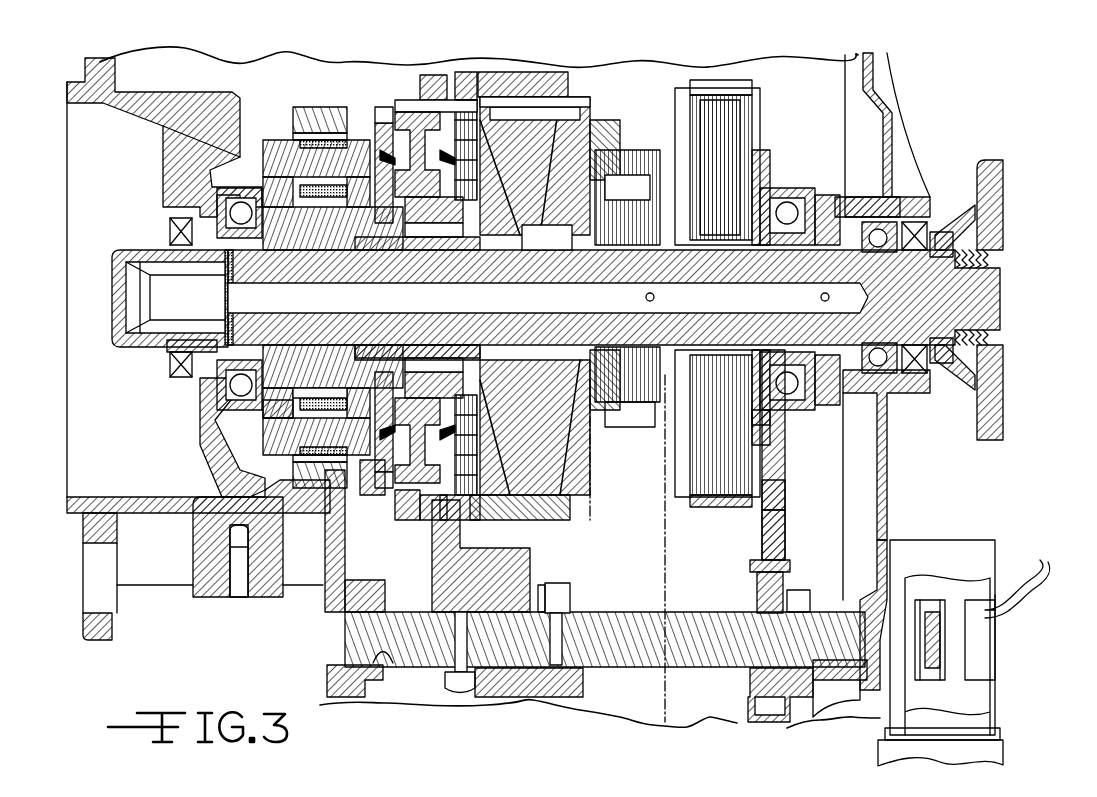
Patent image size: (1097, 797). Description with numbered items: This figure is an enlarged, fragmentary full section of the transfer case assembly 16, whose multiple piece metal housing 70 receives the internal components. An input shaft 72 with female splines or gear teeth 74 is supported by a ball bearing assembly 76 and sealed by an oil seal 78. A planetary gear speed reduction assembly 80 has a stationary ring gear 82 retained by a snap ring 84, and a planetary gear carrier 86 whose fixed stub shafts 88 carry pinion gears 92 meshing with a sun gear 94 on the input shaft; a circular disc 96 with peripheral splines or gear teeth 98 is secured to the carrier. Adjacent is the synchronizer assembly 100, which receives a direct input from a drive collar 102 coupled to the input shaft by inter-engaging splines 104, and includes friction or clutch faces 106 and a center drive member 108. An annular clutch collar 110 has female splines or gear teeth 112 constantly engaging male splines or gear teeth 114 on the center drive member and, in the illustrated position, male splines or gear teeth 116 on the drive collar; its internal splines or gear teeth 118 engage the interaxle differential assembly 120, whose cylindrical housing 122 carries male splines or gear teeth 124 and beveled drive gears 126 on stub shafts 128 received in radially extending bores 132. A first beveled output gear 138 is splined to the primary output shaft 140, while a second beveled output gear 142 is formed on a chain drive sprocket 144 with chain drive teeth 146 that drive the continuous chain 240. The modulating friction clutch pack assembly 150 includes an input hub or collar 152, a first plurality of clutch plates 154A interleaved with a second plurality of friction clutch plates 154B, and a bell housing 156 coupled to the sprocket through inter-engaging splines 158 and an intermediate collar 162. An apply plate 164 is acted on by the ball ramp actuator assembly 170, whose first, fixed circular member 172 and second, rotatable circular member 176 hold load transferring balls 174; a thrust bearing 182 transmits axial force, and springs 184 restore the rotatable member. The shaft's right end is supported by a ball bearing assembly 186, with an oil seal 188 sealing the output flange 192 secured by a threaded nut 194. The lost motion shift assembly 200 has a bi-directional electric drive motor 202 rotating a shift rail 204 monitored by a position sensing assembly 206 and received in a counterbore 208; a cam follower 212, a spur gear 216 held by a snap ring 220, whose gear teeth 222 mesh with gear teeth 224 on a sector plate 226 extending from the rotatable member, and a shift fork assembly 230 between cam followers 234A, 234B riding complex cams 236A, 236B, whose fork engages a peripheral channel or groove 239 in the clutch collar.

The transfer case assembly 16 is at (965, 60).
The housing 70 is at (97, 62).
The input shaft 72 is at (125, 347).
The female splines or gear teeth 74 is at (152, 293).
The ball bearing assembly 76 is at (232, 203).
The oil seal 78 is at (172, 378).
The planetary gear speed reduction assembly 80 is at (301, 56).
The stationary ring gear 82 is at (300, 505).
The snap ring 84 is at (405, 500).
The planetary gear carrier 86 is at (285, 445).
The fixed stub shafts 88 is at (263, 438).
The pinion gears 92 is at (270, 105).
The sun gear 94 is at (345, 298).
The circular disc 96 is at (350, 110).
The peripheral splines or gear teeth 98 is at (372, 470).
The synchronizer assembly 100 is at (445, 44).
The drive collar 102 is at (560, 75).
The inter-engaging splines 104 is at (428, 345).
The friction or clutch faces 106 is at (380, 105).
The center drive member 108 is at (428, 78).
The annular clutch collar 110 is at (540, 95).
The female splines or gear teeth 112 is at (440, 115).
The male splines or gear teeth 114 is at (440, 520).
The male splines or gear teeth 116 is at (478, 80).
The female or internal splines or gear teeth 118 is at (530, 512).
The interaxle differential assembly 120 is at (632, 100).
The cylindrical housing 122 is at (548, 470).
The male splines or gear teeth 124 is at (575, 100).
The beveled drive gears 126 is at (570, 165).
The stub shafts 128 is at (565, 135).
The radially extending bores 132 is at (568, 80).
The first beveled output gear 138 is at (547, 238).
The primary output shaft 140 is at (978, 297).
The second beveled output gear 142 is at (572, 383).
The chain drive sprocket 144 is at (608, 395).
The chain drive teeth 146 is at (632, 412).
The modulating friction clutch pack assembly 150 is at (722, 60).
The input hub or collar 152 is at (740, 180).
The first plurality of clutch plates 154A is at (715, 150).
The second plurality of friction clutch plates 154B is at (720, 120).
The bell housing 156 is at (725, 92).
The inter-engaging splines 158 is at (715, 262).
The intermediate collar 162 is at (668, 262).
The apply plate 164 is at (720, 507).
The ball ramp actuator assembly 170 is at (866, 465).
The first, fixed circular member 172 is at (803, 405).
The load transferring balls 174 is at (796, 213).
The second, rotatable circular member 176 is at (785, 463).
The thrust bearing 182 is at (765, 505).
The springs 184 is at (772, 405).
The ball bearing assembly 186 is at (888, 165).
The oil seal 188 is at (915, 222).
The output flange 192 is at (1003, 197).
The threaded nut 194 is at (990, 258).
The lost motion shift assembly 200 is at (1010, 650).
The bi-directional electric drive motor 202 is at (1002, 752).
The bi-directionally rotating shift rail 204 is at (718, 662).
The position sensing assembly 206 is at (985, 665).
The counterbore 208 is at (387, 680).
The cam roller or follower 212 is at (797, 590).
The spur gear 216 is at (805, 700).
The snap ring 220 is at (737, 690).
The gear teeth 222 is at (757, 580).
The gear teeth 224 is at (790, 560).
The sector plate 226 is at (785, 488).
The shift fork assembly 230 is at (546, 714).
The cam follower 234A is at (455, 695).
The cam follower 234B is at (572, 600).
The complex cam 236A is at (483, 697).
The complex cam 236B is at (545, 585).
The peripheral channel or groove 239 is at (432, 580).
The continuous chain 240 is at (665, 722).